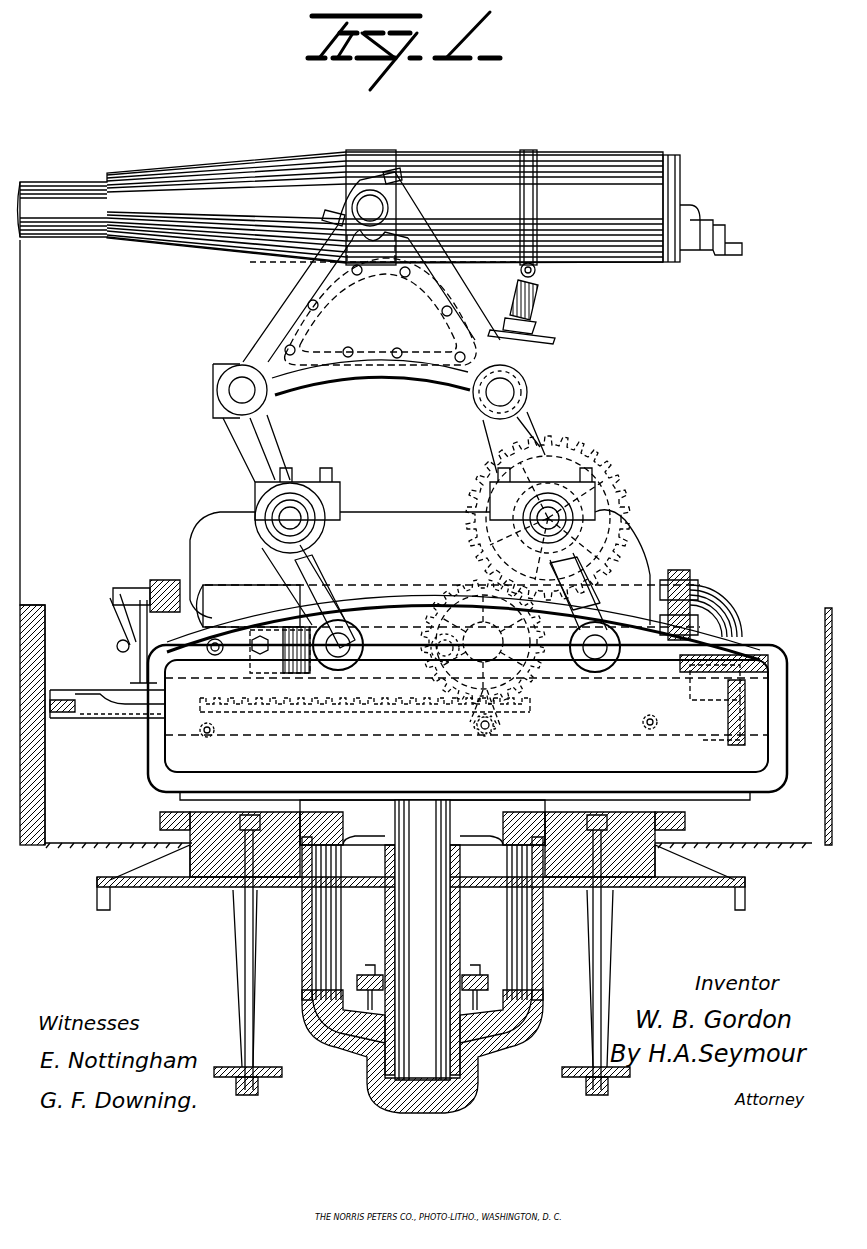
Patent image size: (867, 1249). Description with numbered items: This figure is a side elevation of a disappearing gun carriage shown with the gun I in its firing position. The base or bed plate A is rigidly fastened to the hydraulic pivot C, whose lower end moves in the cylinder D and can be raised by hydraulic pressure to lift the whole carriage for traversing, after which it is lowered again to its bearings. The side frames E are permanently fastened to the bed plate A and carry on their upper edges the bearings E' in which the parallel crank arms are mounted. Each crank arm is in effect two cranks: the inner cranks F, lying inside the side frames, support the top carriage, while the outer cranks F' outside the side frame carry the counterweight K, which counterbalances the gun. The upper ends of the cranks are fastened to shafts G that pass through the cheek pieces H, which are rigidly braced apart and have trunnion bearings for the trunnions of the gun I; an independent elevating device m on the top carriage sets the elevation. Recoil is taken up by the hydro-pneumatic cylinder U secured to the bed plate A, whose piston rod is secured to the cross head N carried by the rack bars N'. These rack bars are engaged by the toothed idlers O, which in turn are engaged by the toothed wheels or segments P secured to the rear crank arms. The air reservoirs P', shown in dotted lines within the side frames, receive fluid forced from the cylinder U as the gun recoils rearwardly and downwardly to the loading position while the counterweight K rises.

The gun I is at (475, 196).
The elevating device m is at (524, 303).
The shafts G is at (236, 390).
The cheek pieces H is at (392, 372).
The inner cranks F is at (409, 466).
The bearings E' is at (468, 512).
The toothed wheels or segments P is at (529, 518).
The side frames E is at (463, 591).
The outer cranks F' is at (421, 615).
The air reservoirs P' is at (205, 631).
The toothed idlers O is at (492, 658).
The hydro-pneumatic cylinder U is at (466, 706).
The counterweight K is at (599, 672).
The cross head N is at (107, 687).
The rack bars N' is at (122, 737).
The base or bed plate A is at (688, 800).
The hydraulic pivot C is at (385, 919).
The cylinder D is at (490, 1045).